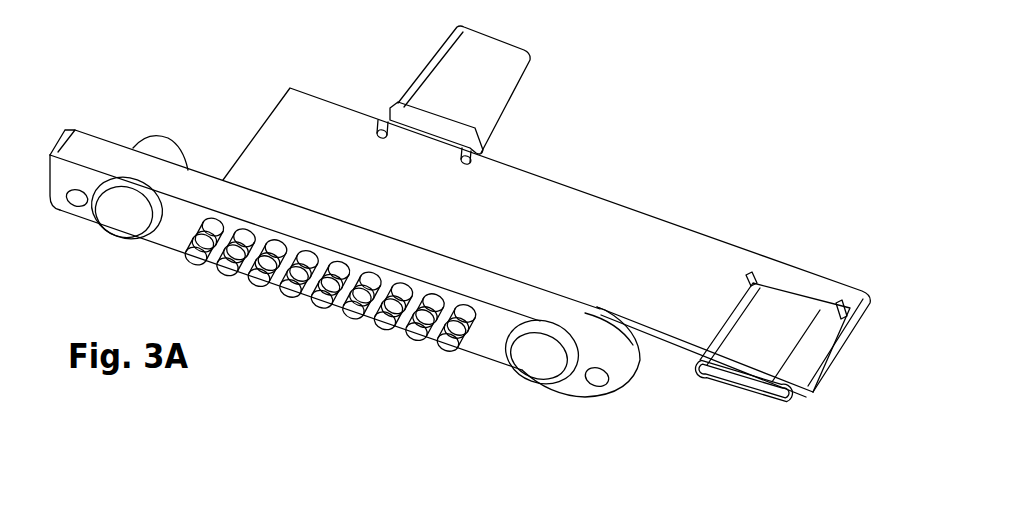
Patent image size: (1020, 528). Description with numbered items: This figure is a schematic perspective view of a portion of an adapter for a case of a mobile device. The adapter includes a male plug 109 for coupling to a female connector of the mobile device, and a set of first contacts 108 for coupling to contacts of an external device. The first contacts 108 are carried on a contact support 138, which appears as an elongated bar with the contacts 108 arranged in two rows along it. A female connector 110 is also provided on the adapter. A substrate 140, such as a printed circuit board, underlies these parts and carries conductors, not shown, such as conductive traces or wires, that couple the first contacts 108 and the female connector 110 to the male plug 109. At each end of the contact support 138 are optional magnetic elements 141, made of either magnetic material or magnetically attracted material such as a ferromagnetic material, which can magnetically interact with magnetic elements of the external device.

The first contacts 108 is at (380, 330).
The male plug 109 is at (523, 88).
The female connector 110 is at (787, 400).
The contact support 138 is at (480, 347).
The substrate 140 is at (578, 190).
The magnetic elements 141 is at (118, 212).